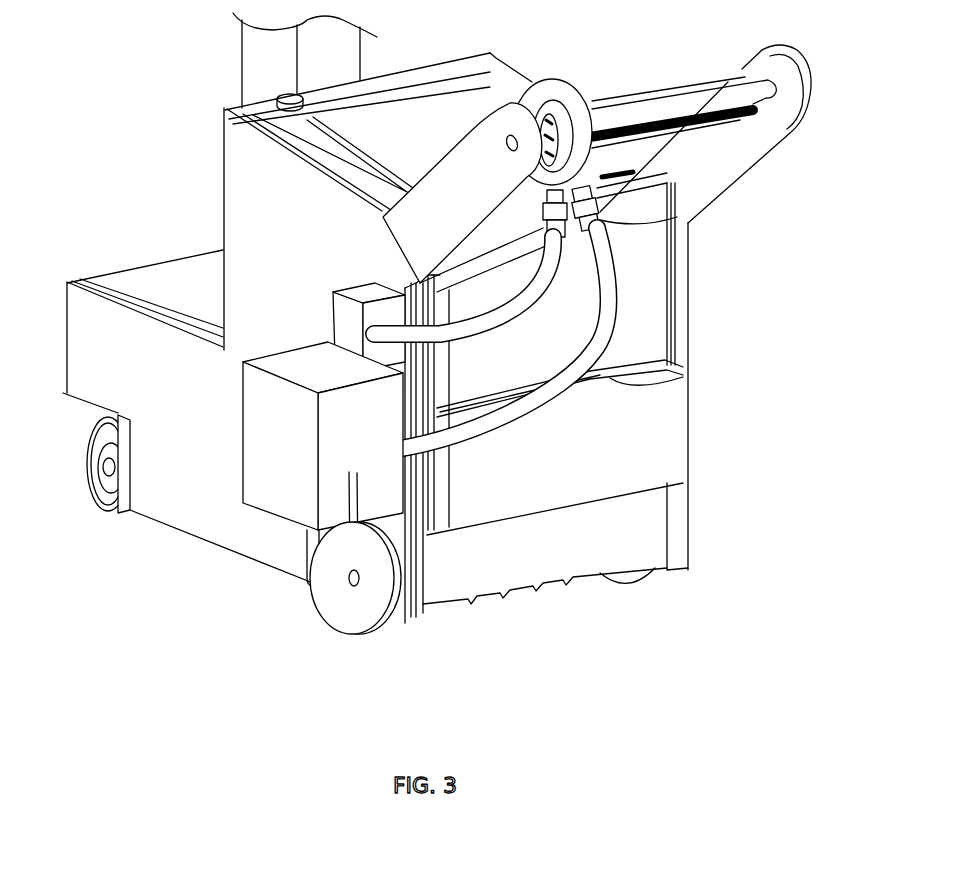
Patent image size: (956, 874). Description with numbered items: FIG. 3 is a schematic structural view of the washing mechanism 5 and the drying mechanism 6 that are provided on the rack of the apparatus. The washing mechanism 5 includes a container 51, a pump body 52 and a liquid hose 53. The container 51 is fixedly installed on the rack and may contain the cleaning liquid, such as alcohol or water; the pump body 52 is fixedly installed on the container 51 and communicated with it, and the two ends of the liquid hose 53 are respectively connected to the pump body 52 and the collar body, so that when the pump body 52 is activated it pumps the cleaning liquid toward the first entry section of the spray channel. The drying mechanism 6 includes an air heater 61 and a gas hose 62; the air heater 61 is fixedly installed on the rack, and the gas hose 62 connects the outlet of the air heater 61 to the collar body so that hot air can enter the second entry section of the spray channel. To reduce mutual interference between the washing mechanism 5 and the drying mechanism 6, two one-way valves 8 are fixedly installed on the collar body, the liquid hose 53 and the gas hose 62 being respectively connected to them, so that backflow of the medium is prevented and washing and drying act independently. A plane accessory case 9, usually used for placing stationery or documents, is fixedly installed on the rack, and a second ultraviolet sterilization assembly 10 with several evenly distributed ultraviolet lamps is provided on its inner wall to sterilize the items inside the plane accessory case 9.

The washing mechanism 5 is at (324, 529).
The container 51 is at (272, 507).
The pump body 52 is at (348, 583).
The liquid hose 53 is at (392, 590).
The drying mechanism 6 is at (370, 303).
The air heater 61 is at (345, 342).
The gas hose 62 is at (398, 297).
The one-way valve 8 is at (690, 215).
The plane accessory case 9 is at (672, 425).
The second ultraviolet sterilization assembly 10 is at (687, 378).